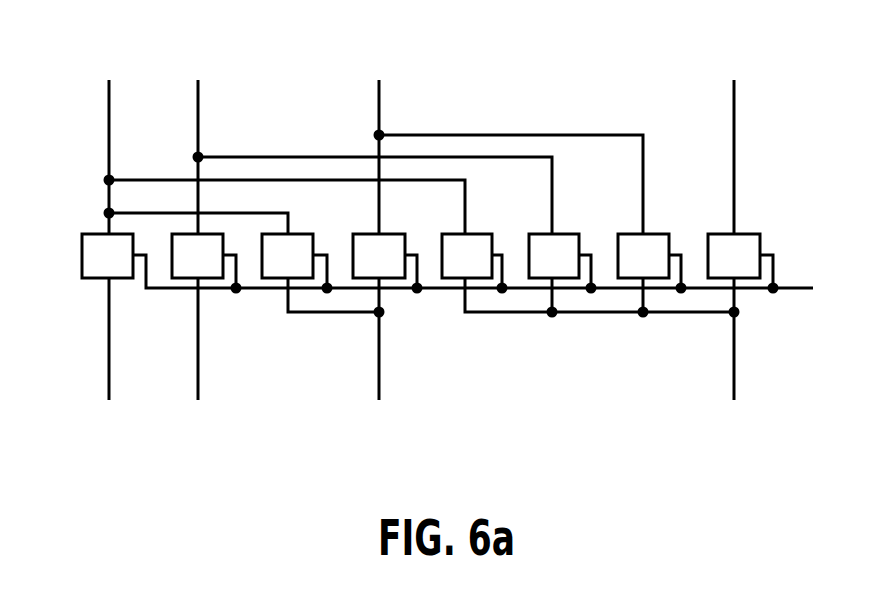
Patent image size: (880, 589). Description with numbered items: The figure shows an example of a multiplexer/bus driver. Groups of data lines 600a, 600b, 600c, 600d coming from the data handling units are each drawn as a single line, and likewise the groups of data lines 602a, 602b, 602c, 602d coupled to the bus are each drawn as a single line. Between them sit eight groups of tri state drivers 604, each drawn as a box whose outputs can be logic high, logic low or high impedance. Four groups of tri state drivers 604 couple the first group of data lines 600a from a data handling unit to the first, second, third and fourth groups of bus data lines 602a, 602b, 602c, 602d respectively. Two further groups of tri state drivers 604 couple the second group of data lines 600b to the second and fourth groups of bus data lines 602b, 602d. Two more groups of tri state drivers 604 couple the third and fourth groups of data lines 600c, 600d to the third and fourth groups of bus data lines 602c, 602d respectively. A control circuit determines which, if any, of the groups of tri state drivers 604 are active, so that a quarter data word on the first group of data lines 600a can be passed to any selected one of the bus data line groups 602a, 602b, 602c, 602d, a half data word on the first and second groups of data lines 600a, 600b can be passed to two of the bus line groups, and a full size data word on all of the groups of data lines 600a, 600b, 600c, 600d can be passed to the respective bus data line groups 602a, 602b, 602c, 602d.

The first group of data lines from the bus 602a is at (734, 100).
The second group of data lines from the bus 602b is at (379, 100).
The third group of data lines from the bus 602c is at (198, 100).
The fourth group of data lines from the bus 602d is at (109, 100).
The first group of data lines from the data handling unit 600a is at (734, 390).
The second group of data lines from the data handling unit 600b is at (379, 390).
The third group of data lines from the data handling unit 600c is at (198, 390).
The fourth group of data lines from the data handling unit 600d is at (109, 390).
The tri state drivers 604 is at (123, 278).